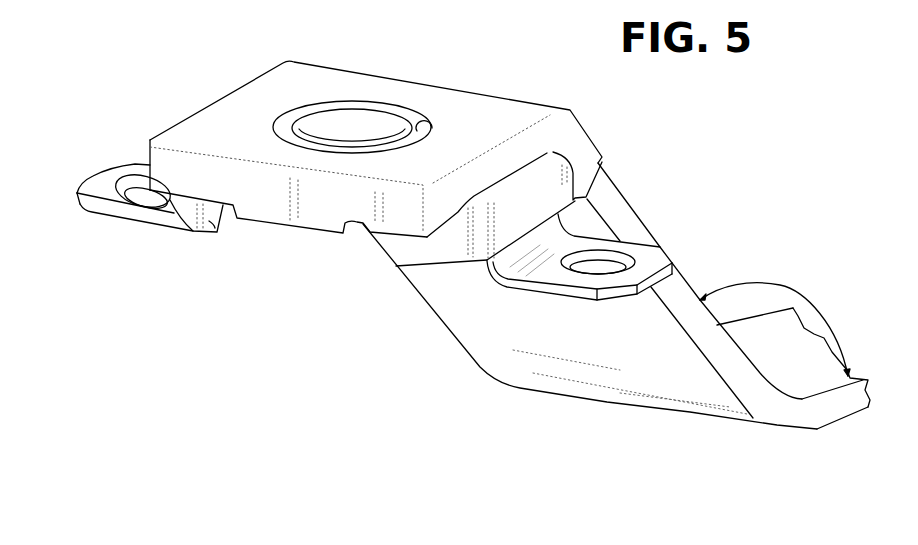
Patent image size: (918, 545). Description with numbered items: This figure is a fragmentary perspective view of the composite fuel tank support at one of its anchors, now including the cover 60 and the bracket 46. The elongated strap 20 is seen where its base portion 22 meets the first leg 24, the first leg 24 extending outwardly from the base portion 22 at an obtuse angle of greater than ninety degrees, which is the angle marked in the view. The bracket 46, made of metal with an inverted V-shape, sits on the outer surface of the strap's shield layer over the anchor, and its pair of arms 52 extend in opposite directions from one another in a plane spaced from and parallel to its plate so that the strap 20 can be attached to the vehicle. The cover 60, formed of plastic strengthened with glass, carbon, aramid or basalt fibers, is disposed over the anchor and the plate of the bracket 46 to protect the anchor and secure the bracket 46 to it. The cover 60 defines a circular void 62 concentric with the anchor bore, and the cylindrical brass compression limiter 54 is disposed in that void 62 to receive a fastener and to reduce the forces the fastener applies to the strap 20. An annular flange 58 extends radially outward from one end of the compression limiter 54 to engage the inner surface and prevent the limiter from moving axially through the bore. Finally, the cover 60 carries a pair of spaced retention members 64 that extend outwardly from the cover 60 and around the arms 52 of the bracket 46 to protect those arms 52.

The strap 20 is at (655, 196).
The base portion 22 is at (793, 375).
The first leg 24 is at (453, 318).
The bracket 46 is at (117, 222).
The arms 52 is at (103, 193).
The compression limiter 54 is at (350, 125).
The annular flange 58 is at (388, 110).
The cover 60 is at (193, 114).
The void 62 is at (421, 130).
The retention members 64 is at (218, 232).